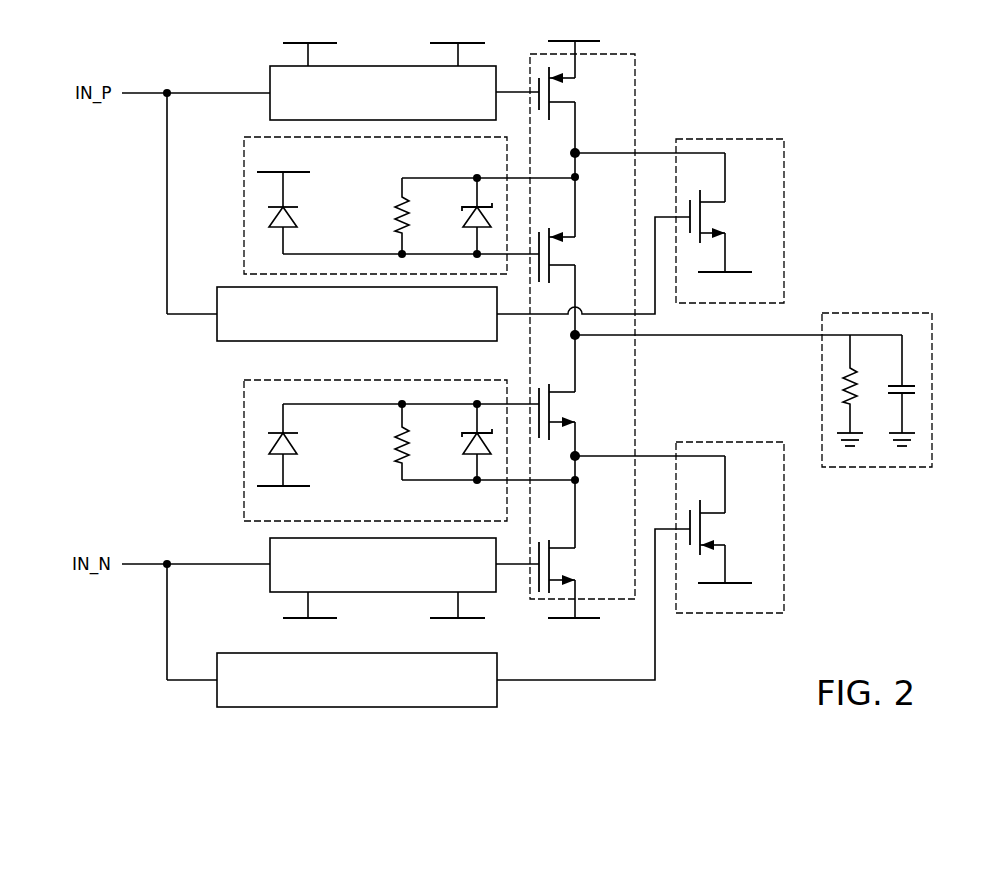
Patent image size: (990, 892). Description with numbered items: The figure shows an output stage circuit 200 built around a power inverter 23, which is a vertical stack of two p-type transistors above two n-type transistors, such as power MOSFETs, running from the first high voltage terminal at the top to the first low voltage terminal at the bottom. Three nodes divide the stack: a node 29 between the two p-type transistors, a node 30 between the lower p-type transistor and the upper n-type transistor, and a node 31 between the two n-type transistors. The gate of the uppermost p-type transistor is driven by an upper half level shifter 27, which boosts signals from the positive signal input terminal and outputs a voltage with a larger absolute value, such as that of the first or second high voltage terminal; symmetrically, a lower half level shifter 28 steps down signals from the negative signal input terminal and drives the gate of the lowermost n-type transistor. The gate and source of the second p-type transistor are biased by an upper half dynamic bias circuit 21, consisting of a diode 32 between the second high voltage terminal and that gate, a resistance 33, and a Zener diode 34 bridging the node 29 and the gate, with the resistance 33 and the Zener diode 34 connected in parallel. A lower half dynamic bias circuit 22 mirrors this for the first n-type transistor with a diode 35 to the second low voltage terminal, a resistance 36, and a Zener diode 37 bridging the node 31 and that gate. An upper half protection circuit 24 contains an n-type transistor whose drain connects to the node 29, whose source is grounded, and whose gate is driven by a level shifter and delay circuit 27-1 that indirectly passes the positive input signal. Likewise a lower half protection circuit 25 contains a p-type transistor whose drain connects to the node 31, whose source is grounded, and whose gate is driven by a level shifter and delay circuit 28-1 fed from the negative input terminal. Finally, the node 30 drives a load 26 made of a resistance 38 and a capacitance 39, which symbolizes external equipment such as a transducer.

The output stage circuit 200 is at (146, 35).
The upper half dynamic bias circuit 21 is at (381, 205).
The lower half dynamic bias circuit 22 is at (381, 450).
The power inverter 23 is at (636, 100).
The upper half protection circuit 24 is at (785, 187).
The lower half protection circuit 25 is at (785, 543).
The load 26 is at (878, 365).
The upper half level shifter 27 is at (270, 71).
The level shifter and delay circuit 27-1 is at (217, 330).
The lower half level shifter 28 is at (270, 582).
The level shifter and delay circuit 28-1 is at (217, 694).
The node 29 is at (579, 157).
The node 30 is at (579, 339).
The node 31 is at (579, 460).
The diode 32 is at (300, 216).
The resistance 33 is at (390, 215).
The Zener diode 34 is at (460, 217).
The diode 35 is at (300, 442).
The resistance 36 is at (390, 442).
The Zener diode 37 is at (455, 440).
The resistance 38 is at (840, 388).
The capacitance 39 is at (920, 390).